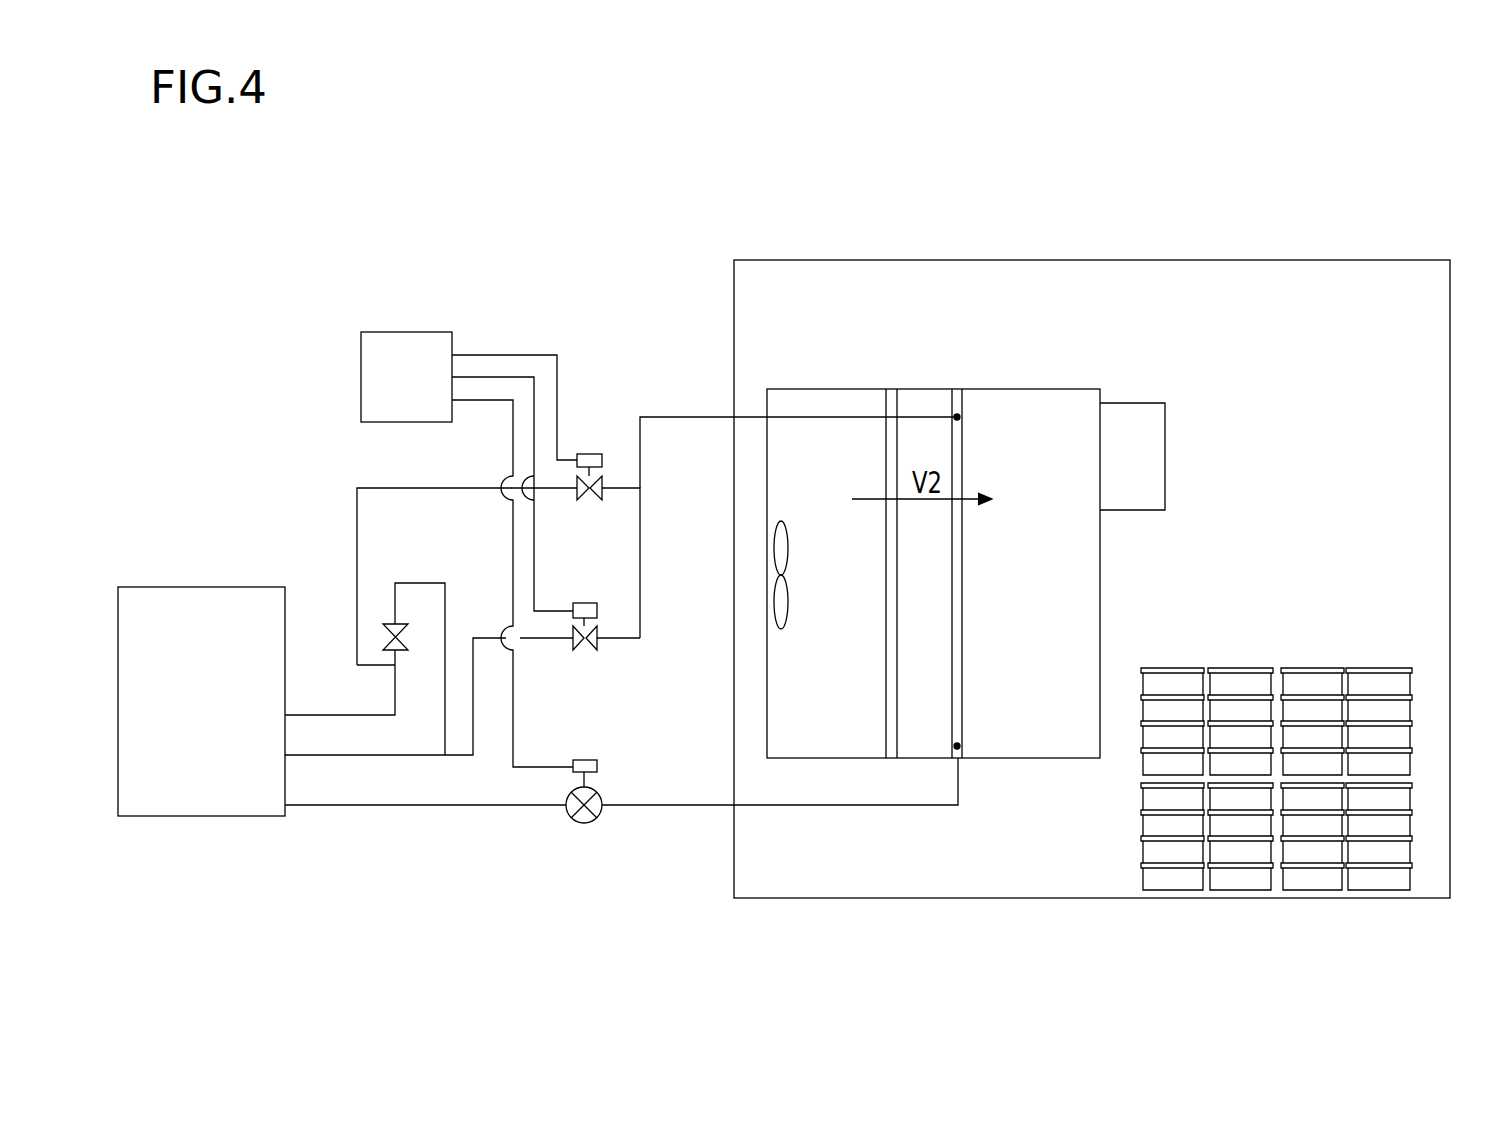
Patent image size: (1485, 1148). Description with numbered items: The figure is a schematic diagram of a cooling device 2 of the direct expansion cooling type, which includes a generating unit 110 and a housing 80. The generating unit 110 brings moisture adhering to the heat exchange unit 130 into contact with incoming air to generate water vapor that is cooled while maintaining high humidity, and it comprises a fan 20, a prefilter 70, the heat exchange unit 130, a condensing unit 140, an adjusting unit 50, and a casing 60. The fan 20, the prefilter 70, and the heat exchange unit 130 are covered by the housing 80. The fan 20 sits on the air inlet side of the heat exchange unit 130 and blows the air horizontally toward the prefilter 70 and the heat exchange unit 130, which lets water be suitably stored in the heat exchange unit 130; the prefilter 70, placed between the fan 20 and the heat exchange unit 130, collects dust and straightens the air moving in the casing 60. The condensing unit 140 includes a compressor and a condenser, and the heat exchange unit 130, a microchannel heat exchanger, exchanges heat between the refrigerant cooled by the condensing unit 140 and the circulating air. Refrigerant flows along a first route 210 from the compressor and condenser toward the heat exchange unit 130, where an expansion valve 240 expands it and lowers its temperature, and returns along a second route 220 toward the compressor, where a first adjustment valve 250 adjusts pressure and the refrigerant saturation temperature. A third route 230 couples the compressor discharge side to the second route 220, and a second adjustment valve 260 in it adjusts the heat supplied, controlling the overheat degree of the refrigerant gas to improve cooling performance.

The cooling device 2 is at (192, 255).
The fan 20 is at (775, 602).
The adjusting unit 50 is at (402, 345).
The casing 60 is at (1040, 387).
The prefilter 70 is at (888, 398).
The housing 80 is at (1320, 258).
The generating unit 110 is at (503, 850).
The heat exchange unit 130 is at (955, 398).
The condensing unit 140 is at (195, 810).
The first route 210 is at (663, 810).
The second route 220 is at (663, 412).
The third route 230 is at (355, 493).
The expansion valve 240 is at (585, 823).
The first adjustment valve 250 is at (590, 650).
The second adjustment valve 260 is at (592, 500).